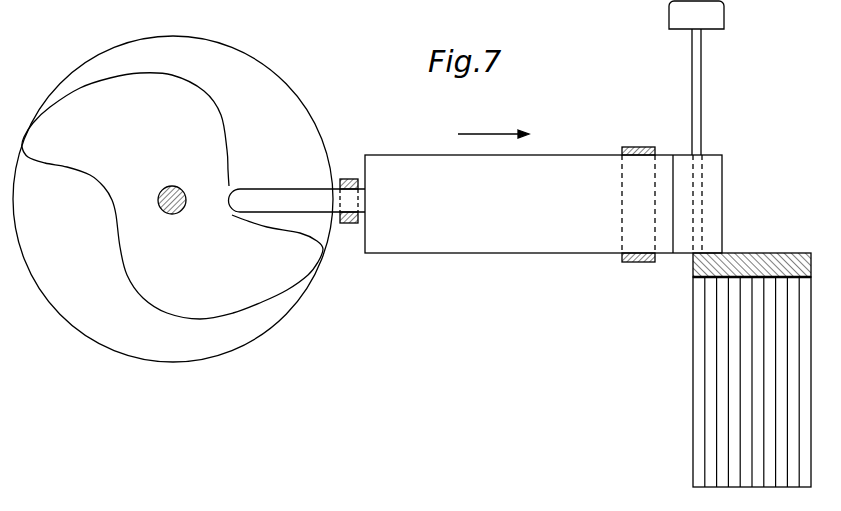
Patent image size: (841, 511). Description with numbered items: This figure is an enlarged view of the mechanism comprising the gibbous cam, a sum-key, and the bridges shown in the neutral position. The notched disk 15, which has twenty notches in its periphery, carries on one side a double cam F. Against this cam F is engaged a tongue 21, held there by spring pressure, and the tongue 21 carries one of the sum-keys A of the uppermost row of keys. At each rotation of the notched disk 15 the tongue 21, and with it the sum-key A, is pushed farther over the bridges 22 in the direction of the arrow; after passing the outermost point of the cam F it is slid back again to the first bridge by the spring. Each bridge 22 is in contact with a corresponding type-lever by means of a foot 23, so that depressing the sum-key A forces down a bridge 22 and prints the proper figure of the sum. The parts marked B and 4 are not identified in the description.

The notched disk 15 is at (173, 199).
The double cam F is at (198, 259).
The tongue 21 is at (297, 201).
The bearings B is at (356, 226).
The sum-key A is at (628, 20).
The bridge 22 is at (752, 252).
The foot 23 is at (697, 350).
The scale member 4 is at (733, 394).